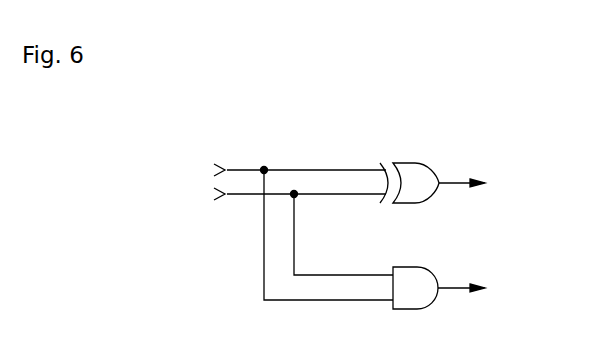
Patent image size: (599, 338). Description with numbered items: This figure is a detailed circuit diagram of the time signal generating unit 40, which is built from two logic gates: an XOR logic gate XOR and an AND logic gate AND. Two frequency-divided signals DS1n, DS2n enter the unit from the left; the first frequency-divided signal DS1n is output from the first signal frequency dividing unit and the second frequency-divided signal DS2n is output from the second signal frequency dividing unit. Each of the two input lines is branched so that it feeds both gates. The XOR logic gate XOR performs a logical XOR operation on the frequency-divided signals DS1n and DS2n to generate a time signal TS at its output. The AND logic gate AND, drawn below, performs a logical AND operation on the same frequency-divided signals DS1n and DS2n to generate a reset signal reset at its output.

The time signal generating unit 40 is at (462, 98).
The frequency-divided signal DS1n is at (276, 229).
The frequency-divided signal DS2n is at (276, 229).
The XOR logic gate XOR is at (409, 195).
The AND logic gate AND is at (416, 299).
The time signal TS is at (479, 182).
The reset signal reset is at (489, 288).